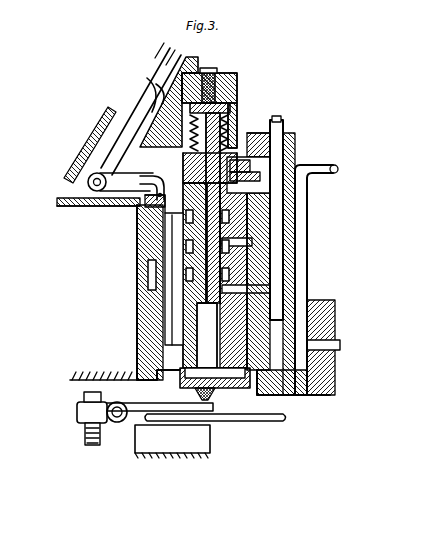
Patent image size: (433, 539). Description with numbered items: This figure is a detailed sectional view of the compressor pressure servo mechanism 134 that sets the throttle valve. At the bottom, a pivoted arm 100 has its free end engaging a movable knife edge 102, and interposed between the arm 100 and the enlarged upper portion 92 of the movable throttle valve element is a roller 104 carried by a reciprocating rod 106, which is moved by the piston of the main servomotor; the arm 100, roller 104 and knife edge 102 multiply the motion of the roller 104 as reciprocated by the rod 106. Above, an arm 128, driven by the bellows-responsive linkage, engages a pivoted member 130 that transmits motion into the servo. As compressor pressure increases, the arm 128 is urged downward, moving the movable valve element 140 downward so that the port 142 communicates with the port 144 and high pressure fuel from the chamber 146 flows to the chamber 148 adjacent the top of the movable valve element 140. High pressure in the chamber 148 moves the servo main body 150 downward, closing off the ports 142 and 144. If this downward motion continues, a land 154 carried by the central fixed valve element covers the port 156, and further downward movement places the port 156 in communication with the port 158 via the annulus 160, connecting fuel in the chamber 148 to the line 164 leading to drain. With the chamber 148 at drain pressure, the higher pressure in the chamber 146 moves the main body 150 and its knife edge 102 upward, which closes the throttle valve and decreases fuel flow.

The enlarged upper portion 92 is at (210, 442).
The pivoted arm 100 is at (137, 408).
The knife edge 102 is at (212, 396).
The roller 104 is at (145, 418).
The reciprocating rod 106 is at (275, 419).
The arm 128 is at (122, 182).
The pivoted member 130 is at (150, 158).
The compressor pressure servo mechanism 134 is at (344, 194).
The movable valve element 140 is at (228, 145).
The port 142 is at (180, 333).
The port 144 is at (260, 320).
The chamber 146 is at (280, 390).
The chamber 148 is at (127, 131).
The servo main body 150 is at (137, 234).
The land 154 is at (222, 255).
The port 156 is at (240, 243).
The port 158 is at (225, 276).
The annulus 160 is at (240, 292).
The line 164 is at (280, 152).